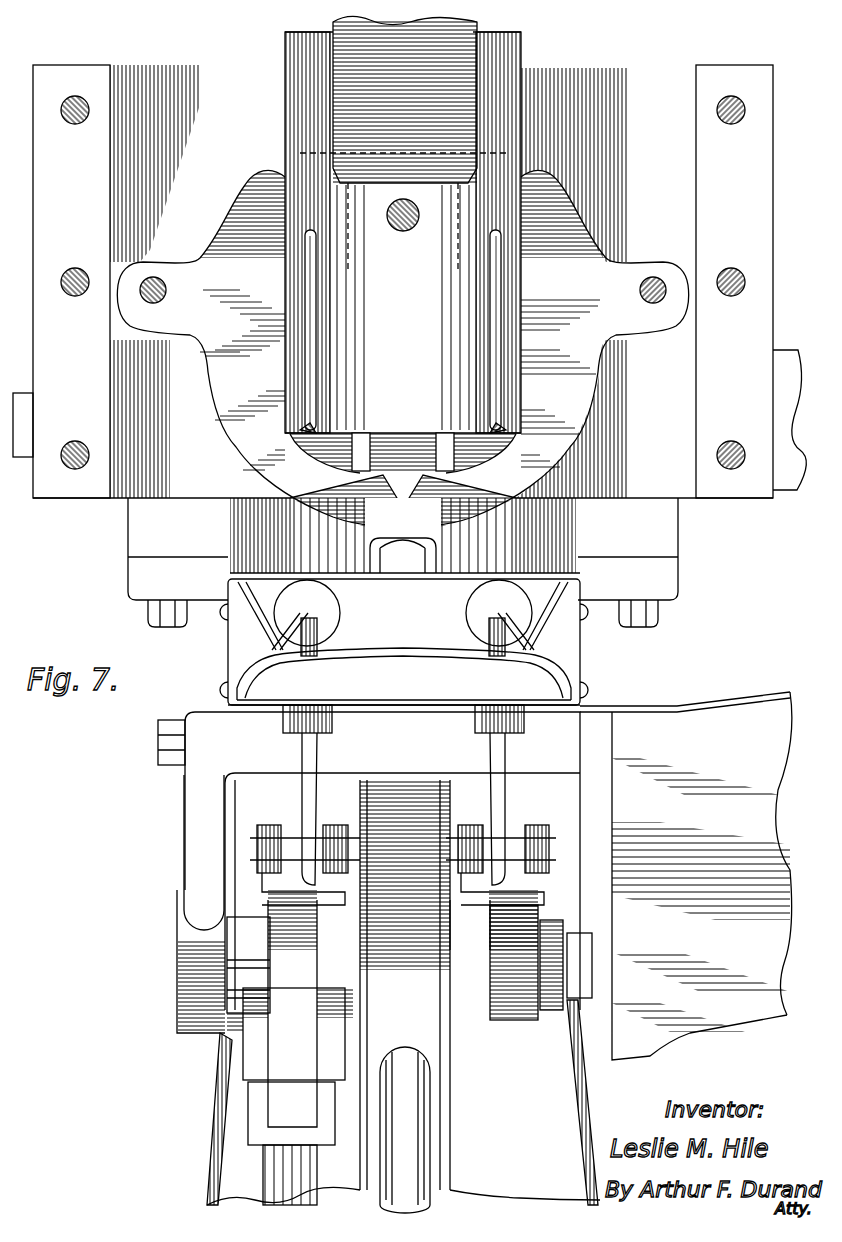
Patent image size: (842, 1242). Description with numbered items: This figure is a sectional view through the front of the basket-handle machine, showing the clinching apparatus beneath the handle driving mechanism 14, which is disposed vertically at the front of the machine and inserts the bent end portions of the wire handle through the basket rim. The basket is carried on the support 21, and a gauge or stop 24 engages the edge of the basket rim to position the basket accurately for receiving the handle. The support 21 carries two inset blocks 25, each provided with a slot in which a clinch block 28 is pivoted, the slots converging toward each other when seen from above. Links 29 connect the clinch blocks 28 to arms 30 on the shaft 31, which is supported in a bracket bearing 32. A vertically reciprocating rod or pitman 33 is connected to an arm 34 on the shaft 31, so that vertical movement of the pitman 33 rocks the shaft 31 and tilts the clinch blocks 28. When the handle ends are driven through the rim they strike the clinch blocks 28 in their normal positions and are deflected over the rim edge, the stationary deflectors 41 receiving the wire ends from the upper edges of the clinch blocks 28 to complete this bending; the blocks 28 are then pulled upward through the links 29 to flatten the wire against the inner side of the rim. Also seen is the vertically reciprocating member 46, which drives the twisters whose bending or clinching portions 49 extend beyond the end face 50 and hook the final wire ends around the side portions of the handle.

The handle driving mechanism 14 is at (415, 398).
The support 21 is at (515, 693).
The gauge or stop 24 is at (237, 660).
The inset blocks 25 is at (487, 722).
The clinch blocks 28 is at (302, 806).
The links 29 is at (320, 887).
The arms 30 is at (298, 902).
The shaft 31 is at (577, 962).
The bracket bearing 32 is at (190, 828).
The vertically reciprocating rod or pitman 33 is at (262, 1128).
The arm 34 is at (395, 1013).
The stationary deflectors 41 is at (318, 623).
The vertically reciprocating member 46 is at (400, 1143).
The bending or clinching portion 49 is at (325, 617).
The face 50 is at (283, 607).